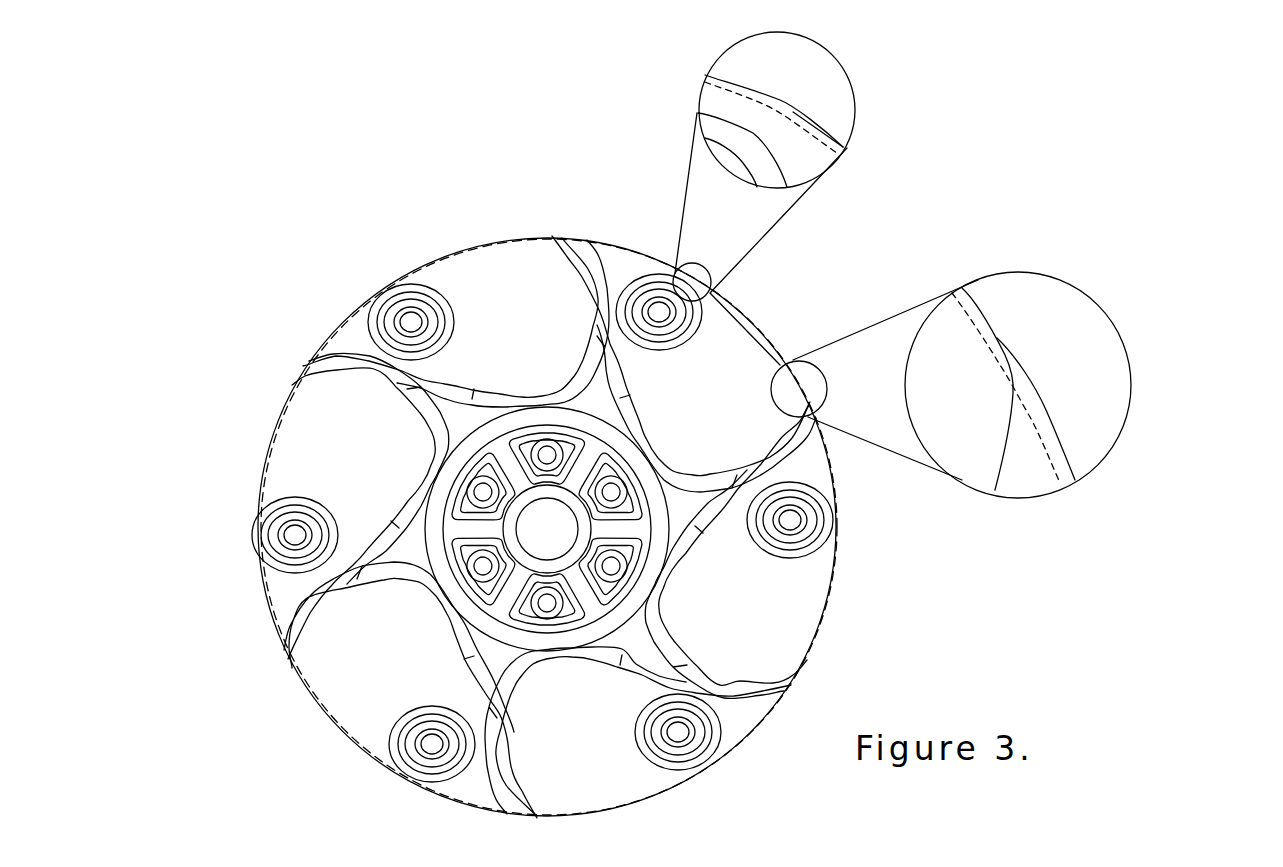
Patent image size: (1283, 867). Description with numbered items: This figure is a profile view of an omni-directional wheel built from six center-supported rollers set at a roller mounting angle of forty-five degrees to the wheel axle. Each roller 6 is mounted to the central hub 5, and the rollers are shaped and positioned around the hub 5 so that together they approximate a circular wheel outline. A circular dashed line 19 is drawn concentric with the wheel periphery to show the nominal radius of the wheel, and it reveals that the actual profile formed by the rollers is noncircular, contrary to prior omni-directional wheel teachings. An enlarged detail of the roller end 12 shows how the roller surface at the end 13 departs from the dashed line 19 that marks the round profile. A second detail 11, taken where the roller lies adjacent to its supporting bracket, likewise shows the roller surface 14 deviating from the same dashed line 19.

The hub 5 is at (620, 585).
The roller 6 is at (785, 631).
The detail of the roller adjacent to the supporting bracket 11 is at (1142, 422).
The roller end 12 is at (868, 153).
The roller surface at the end 13 is at (830, 123).
The roller surface 14 is at (1057, 412).
The circular dashed line 19 is at (753, 107).